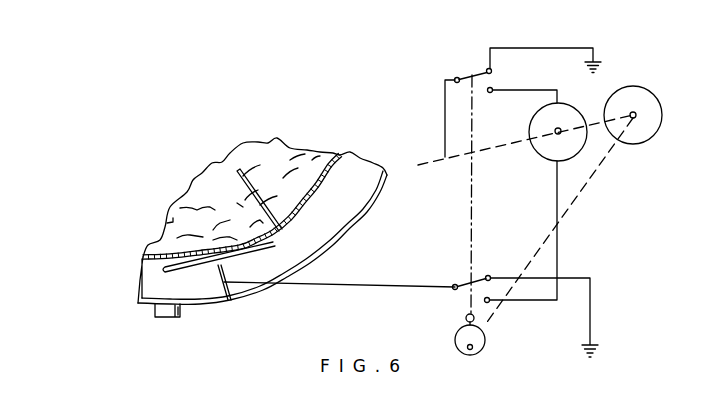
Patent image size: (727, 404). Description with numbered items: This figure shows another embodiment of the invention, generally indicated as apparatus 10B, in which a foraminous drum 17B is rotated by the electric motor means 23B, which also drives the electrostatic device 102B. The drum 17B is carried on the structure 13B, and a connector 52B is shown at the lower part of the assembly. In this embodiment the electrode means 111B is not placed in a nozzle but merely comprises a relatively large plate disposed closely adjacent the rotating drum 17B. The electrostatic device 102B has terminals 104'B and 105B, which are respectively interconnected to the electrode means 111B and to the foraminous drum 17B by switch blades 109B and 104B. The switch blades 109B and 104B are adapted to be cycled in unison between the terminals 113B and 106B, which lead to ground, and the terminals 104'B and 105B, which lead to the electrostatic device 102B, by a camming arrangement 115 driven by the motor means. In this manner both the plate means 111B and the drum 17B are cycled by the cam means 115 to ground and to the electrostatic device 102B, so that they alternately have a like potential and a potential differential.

The apparatus 10B is at (276, 100).
The foraminous drum 17B is at (333, 158).
The helmet shell with brim 13B is at (362, 218).
The electrode means 111B is at (202, 271).
The connector on helmet 52B is at (182, 315).
The switch blade 104B is at (470, 76).
The terminal 106B is at (492, 70).
The terminal 105B is at (492, 90).
The electrostatic device 102B is at (530, 120).
The electric motor means 23B is at (653, 99).
The terminal 113B is at (489, 276).
The switch blade 109B is at (466, 290).
The terminal 104'B is at (521, 316).
The camming arrangement 115 is at (468, 362).